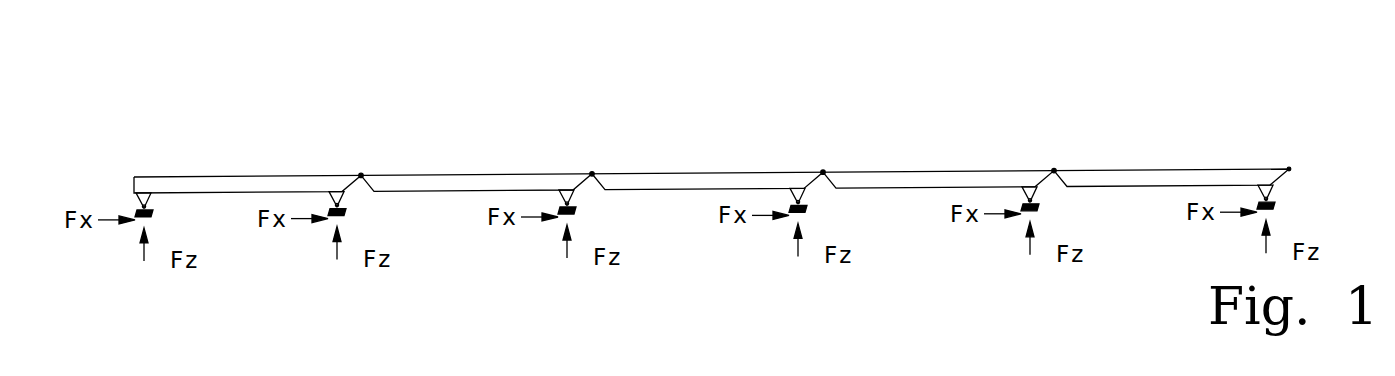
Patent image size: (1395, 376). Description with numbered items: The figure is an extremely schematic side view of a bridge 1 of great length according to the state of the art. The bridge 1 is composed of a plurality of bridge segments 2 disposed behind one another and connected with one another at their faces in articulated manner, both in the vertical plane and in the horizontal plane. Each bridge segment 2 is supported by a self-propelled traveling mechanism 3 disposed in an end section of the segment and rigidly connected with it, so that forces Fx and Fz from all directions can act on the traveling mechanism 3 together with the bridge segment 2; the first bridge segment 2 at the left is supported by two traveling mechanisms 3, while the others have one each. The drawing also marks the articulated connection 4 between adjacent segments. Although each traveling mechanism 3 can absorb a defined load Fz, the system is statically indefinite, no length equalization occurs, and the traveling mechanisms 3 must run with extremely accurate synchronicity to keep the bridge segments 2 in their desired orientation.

The bridge 1 is at (692, 149).
The bridge segment 2 is at (238, 185).
The traveling mechanism 3 is at (362, 212).
The hinge joint 4 is at (356, 168).